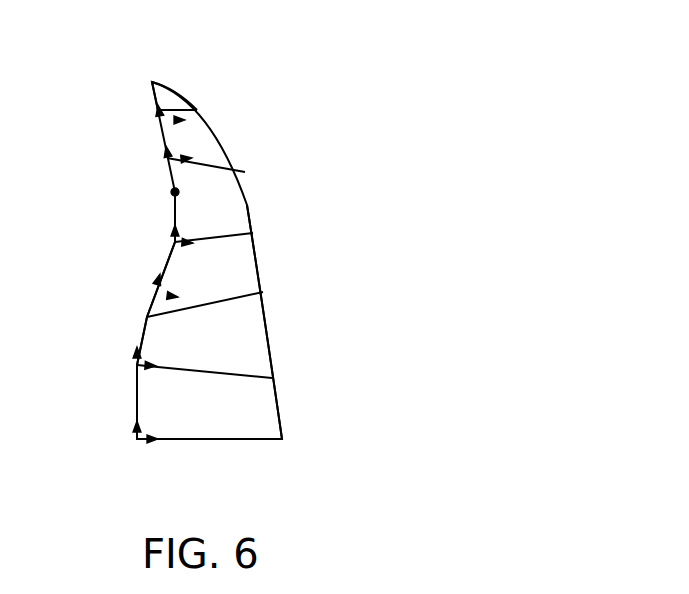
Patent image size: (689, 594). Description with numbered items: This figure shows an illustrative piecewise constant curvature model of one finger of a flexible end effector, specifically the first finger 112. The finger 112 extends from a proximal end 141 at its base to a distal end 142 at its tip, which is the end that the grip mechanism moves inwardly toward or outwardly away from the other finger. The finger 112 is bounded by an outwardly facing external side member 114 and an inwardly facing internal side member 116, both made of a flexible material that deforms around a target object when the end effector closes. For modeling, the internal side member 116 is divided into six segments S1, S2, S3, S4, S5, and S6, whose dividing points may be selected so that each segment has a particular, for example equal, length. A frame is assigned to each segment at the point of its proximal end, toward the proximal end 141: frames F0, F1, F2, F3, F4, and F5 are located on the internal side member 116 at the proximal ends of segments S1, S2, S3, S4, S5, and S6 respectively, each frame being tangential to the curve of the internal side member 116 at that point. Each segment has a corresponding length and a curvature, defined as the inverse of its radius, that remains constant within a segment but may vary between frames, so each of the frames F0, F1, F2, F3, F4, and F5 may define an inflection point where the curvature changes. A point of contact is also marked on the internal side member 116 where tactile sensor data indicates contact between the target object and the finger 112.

The first finger 112 is at (322, 158).
The external side member 114 is at (273, 357).
The internal side member 116 is at (137, 403).
The proximal end 141 is at (152, 467).
The distal end 142 is at (142, 80).
The first segment S1 is at (163, 413).
The second segment S2 is at (179, 340).
The third segment S3 is at (201, 272).
The fourth segment S4 is at (204, 207).
The fifth segment S5 is at (189, 135).
The sixth segment S6 is at (176, 97).
The frame F0 is at (138, 441).
The frame F1 is at (137, 365).
The frame F2 is at (153, 304).
The frame F3 is at (170, 243).
The frame F4 is at (169, 160).
The frame F5 is at (161, 114).